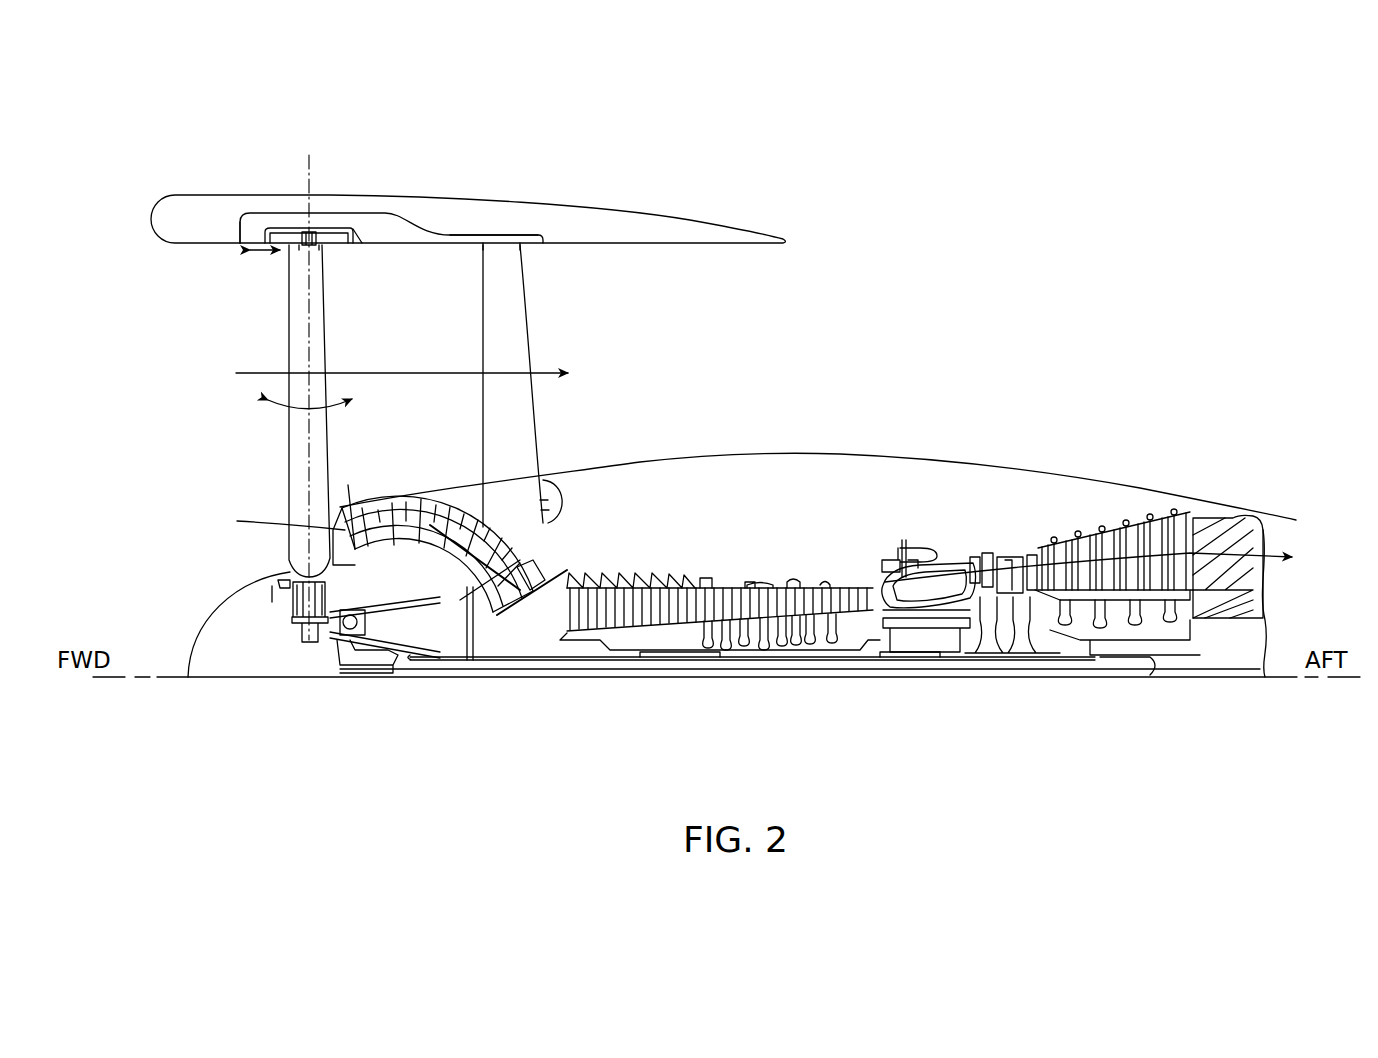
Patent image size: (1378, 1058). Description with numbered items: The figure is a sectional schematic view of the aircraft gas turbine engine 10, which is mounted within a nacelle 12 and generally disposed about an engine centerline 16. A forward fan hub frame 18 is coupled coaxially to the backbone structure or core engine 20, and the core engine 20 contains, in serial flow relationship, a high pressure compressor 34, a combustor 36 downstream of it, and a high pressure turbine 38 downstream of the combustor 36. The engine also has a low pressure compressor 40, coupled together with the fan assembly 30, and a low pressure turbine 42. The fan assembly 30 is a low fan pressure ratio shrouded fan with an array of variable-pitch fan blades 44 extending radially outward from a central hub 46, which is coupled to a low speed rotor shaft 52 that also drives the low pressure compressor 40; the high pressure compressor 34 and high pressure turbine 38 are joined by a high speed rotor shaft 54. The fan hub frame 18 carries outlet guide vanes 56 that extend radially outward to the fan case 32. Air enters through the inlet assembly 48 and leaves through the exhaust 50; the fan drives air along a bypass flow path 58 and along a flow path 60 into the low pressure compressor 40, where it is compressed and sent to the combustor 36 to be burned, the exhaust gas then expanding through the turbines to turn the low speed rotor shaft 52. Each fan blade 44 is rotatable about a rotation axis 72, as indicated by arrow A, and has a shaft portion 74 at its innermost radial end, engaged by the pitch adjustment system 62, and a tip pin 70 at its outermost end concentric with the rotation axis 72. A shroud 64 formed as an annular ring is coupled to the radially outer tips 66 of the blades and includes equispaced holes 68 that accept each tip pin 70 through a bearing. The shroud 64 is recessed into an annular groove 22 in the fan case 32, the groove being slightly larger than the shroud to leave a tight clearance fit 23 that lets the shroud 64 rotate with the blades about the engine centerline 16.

The gas turbine engine 10 is at (1042, 205).
The nacelle 12 is at (150, 200).
The engine centerline 16 is at (1308, 680).
The fan hub frame 18 is at (553, 500).
The core engine 20 is at (663, 703).
The annular groove 22 is at (253, 216).
The tight clearance fit 23 is at (262, 255).
The fan assembly 30 is at (207, 305).
The fan case 32 is at (432, 246).
The high pressure compressor 34 is at (657, 560).
The combustor 36 is at (950, 550).
The high pressure turbine 38 is at (1010, 540).
The low pressure compressor 40 is at (455, 508).
The low pressure turbine 42 is at (1120, 505).
The variable-pitch fan blades 44 is at (289, 473).
The central hub 46 is at (305, 648).
The inlet assembly 48 is at (156, 548).
The exhaust 50 is at (1253, 535).
The low speed rotor shaft 52 is at (436, 663).
The high speed rotor shaft 54 is at (765, 652).
The outlet guide vanes 56 is at (526, 320).
The bypass flow path 58 is at (252, 368).
The flow path 60 is at (250, 522).
The pitch adjustment system 62 is at (270, 608).
The shroud 64 is at (354, 232).
The radially outer tips 66 is at (322, 252).
The holes 68 is at (290, 222).
The tip pin 70 is at (315, 230).
The rotation axis 72 is at (315, 425).
The shaft portion 74 is at (300, 605).
The arrow A is at (272, 408).